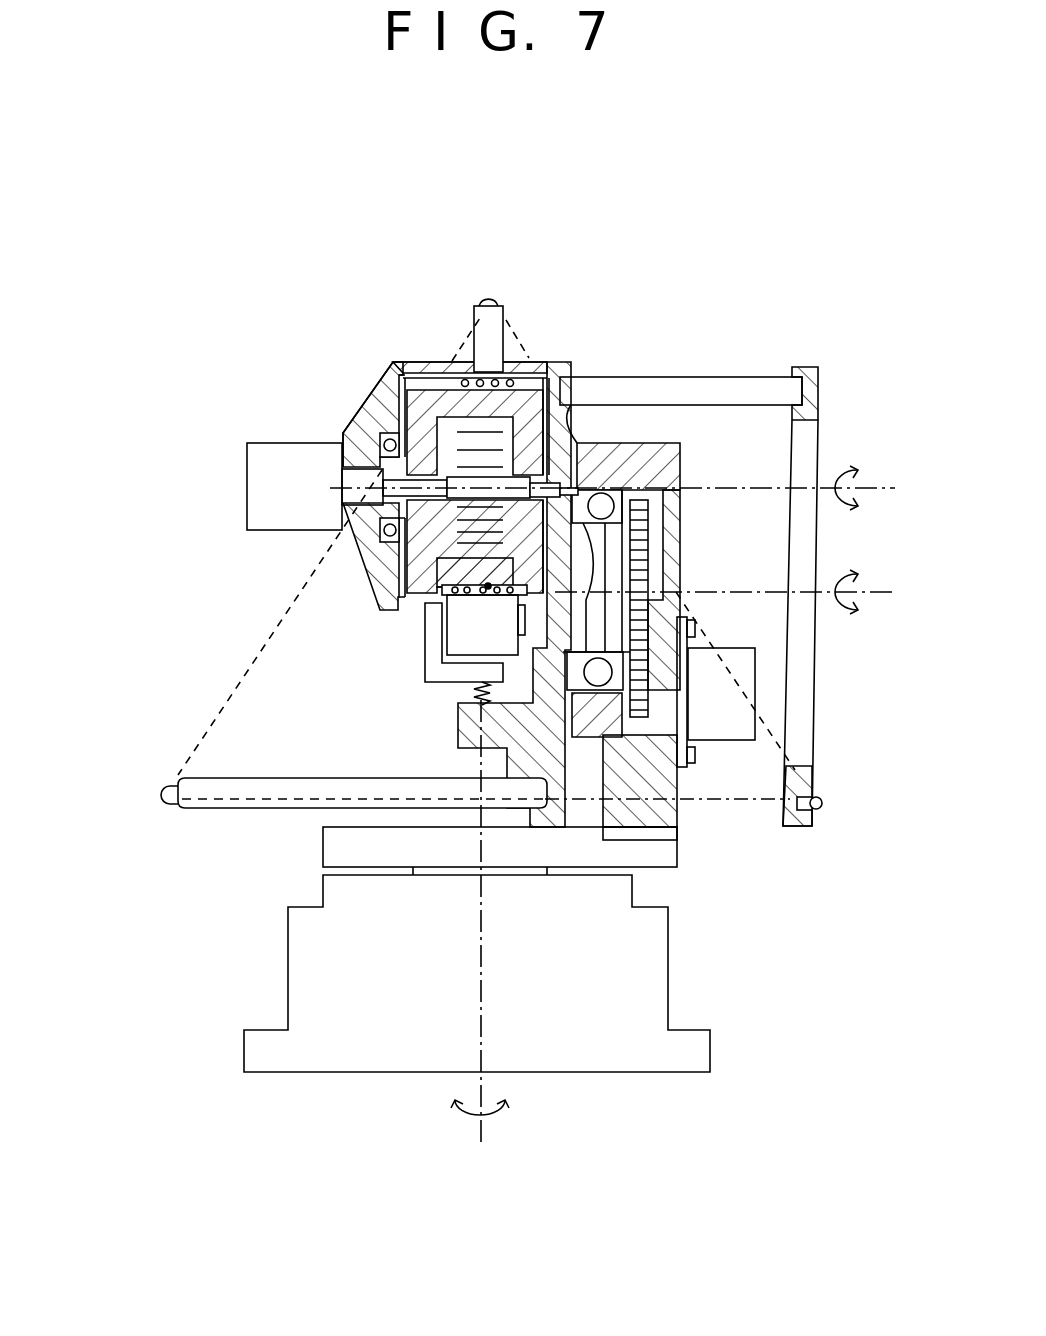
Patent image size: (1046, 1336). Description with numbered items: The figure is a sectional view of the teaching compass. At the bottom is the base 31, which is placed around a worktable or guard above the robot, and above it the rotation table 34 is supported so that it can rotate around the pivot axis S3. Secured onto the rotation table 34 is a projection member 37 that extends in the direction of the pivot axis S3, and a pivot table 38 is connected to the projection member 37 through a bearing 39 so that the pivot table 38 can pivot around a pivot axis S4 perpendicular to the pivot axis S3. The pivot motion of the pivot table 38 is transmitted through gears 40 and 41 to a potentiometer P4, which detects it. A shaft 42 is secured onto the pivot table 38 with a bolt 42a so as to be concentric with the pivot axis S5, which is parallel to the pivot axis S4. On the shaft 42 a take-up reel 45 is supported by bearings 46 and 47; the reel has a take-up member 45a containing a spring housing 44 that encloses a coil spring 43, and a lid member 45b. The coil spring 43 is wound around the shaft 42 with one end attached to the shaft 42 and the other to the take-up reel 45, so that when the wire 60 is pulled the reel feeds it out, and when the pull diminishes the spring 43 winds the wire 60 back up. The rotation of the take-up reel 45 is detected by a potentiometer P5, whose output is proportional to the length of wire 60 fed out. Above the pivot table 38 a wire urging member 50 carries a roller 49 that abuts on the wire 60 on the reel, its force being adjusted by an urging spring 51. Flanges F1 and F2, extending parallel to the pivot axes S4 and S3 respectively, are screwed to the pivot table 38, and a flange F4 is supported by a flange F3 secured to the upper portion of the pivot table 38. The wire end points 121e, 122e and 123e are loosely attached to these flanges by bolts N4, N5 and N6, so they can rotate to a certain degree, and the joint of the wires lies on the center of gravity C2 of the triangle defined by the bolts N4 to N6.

The base 31 is at (657, 960).
The rotation table 34 is at (323, 846).
The projection member 37 is at (651, 815).
The pivot table 38 is at (575, 430).
The bearing 39 is at (770, 392).
The gear 40 is at (680, 605).
The gear 41 is at (643, 710).
The shaft 42 is at (475, 560).
The bolt 42a is at (640, 445).
The coil spring 43 is at (488, 437).
The spring housing 44 is at (440, 548).
The take-up reel 45 is at (388, 392).
The take-up member 45a is at (427, 361).
The lid member 45b is at (368, 430).
The bearing 46 is at (567, 362).
The bearing 47 is at (380, 545).
The roller 49 is at (476, 637).
The wire urging member 50 is at (437, 632).
The urging spring 51 is at (470, 690).
The wire 60 is at (558, 360).
The end point of wire 121e is at (176, 802).
The end point of wire 122e is at (505, 300).
The end point of wire 123e is at (812, 813).
The bolt N4 is at (166, 790).
The bolt N5 is at (489, 298).
The bolt N6 is at (822, 803).
The flange F1 is at (222, 793).
The flange F2 is at (487, 347).
The flange F3 is at (800, 368).
The flange F4 is at (805, 462).
The potentiometer P4 is at (745, 693).
The potentiometer P5 is at (265, 490).
The pivot axis S3 is at (480, 939).
The pivot axis S4 is at (744, 592).
The pivot axis S5 is at (632, 488).
The center of gravity C2 is at (488, 587).